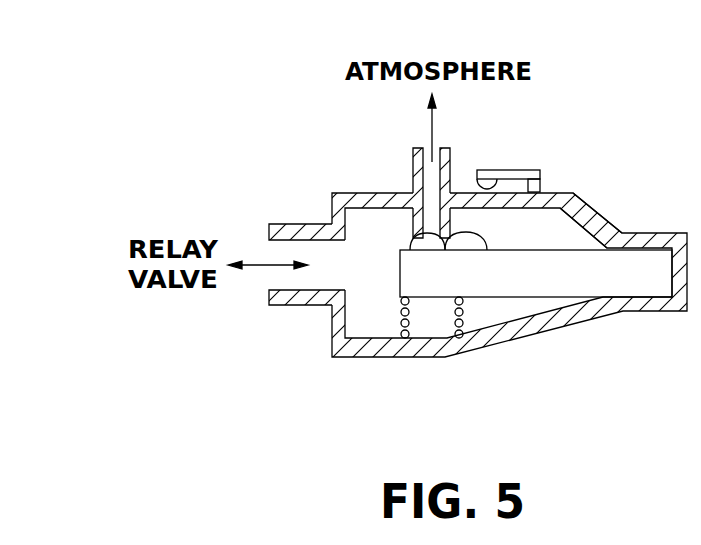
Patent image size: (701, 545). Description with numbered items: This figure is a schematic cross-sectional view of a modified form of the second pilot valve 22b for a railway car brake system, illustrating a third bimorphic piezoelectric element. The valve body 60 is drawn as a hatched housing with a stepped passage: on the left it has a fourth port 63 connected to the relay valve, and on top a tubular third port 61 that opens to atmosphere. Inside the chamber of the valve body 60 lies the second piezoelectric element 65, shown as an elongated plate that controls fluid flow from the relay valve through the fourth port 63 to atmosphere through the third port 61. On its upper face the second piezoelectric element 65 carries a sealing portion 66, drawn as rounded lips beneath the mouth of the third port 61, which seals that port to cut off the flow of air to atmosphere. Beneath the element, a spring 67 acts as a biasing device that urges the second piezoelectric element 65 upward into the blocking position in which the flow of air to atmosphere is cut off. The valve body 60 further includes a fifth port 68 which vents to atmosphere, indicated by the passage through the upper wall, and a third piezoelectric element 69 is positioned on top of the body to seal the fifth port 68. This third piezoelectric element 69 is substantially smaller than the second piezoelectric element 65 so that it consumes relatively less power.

The second pilot valve 22b is at (224, 112).
The valve body 60 is at (328, 345).
The third port 61 is at (410, 168).
The fourth port 63 is at (283, 223).
The second piezoelectric element 65 is at (627, 280).
The sealing portion 66 is at (465, 233).
The spring 67 is at (447, 340).
The fifth port 68 is at (500, 218).
The third piezoelectric element 69 is at (515, 170).